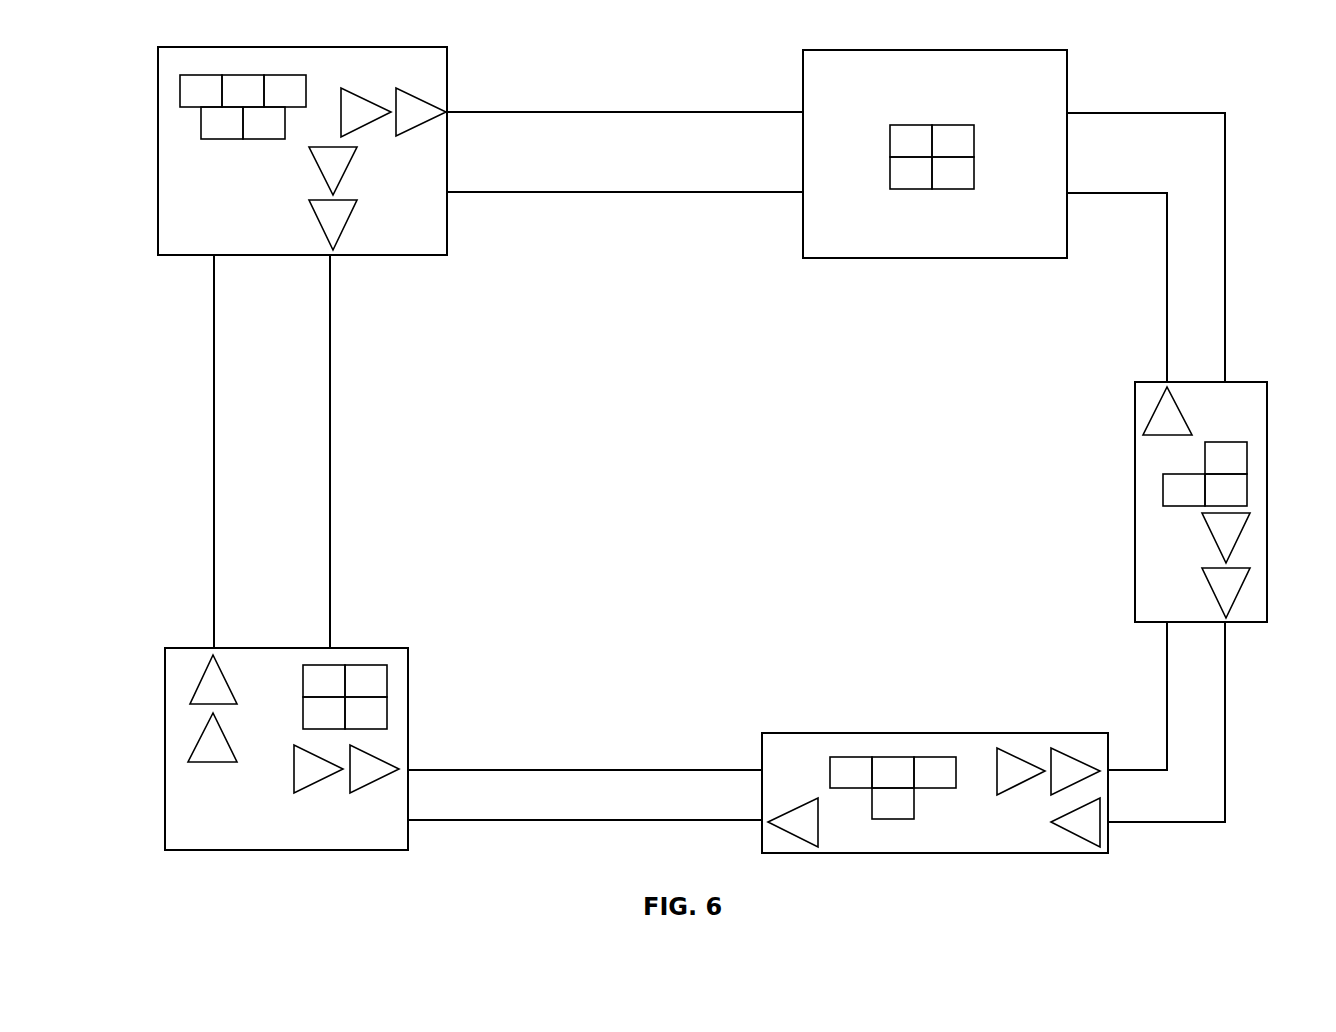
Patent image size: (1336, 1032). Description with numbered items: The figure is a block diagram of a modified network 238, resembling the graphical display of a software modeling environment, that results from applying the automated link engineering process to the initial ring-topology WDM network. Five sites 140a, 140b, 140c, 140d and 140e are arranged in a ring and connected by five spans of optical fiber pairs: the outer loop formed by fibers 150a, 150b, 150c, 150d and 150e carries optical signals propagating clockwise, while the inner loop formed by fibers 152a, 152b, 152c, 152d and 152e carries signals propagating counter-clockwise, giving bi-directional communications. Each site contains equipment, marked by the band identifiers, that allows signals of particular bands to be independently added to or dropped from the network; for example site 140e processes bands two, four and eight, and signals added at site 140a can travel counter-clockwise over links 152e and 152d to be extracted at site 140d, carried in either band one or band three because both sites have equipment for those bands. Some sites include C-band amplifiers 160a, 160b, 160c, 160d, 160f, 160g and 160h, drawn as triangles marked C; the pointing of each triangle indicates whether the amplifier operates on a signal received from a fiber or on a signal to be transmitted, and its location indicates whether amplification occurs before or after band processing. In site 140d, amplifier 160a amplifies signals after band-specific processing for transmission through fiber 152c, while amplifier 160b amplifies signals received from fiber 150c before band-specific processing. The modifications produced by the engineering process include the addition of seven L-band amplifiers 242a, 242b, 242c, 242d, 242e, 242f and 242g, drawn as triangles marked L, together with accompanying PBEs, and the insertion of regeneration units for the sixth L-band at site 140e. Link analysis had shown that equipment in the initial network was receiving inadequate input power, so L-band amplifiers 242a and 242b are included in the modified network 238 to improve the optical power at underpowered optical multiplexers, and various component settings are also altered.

The modified network 238 is at (1148, 58).
The site 140a is at (349, 473).
The site 140b is at (935, 154).
The site 140c is at (1205, 502).
The site 140d is at (968, 775).
The site 140e is at (286, 721).
The optical fiber span 150a is at (710, 105).
The optical fiber span 150b is at (1235, 295).
The optical fiber span 150c is at (1232, 713).
The optical fiber span 150d is at (612, 825).
The optical fiber span 150e is at (205, 457).
The optical fiber span 152a is at (588, 200).
The optical fiber span 152b is at (1162, 325).
The optical fiber span 152c is at (1160, 675).
The optical fiber span 152d is at (570, 765).
The optical fiber span 152e is at (338, 458).
The C-band amplifier 160a is at (1085, 757).
The C-band amplifier 160b is at (1065, 838).
The C-band amplifier 160c is at (350, 225).
The C-band amplifier 160d is at (233, 678).
The C-band amplifier 160f is at (417, 95).
The C-band amplifier 160g is at (1150, 400).
The C-band amplifier 160h is at (1247, 598).
The L-band amplifier 242a is at (785, 835).
The L-band amplifier 242b is at (365, 163).
The L-band amplifier 242c is at (312, 793).
The L-band amplifier 242d is at (1247, 540).
The L-band amplifier 242e is at (1022, 748).
The L-band amplifier 242f is at (236, 737).
The L-band amplifier 242g is at (360, 130).